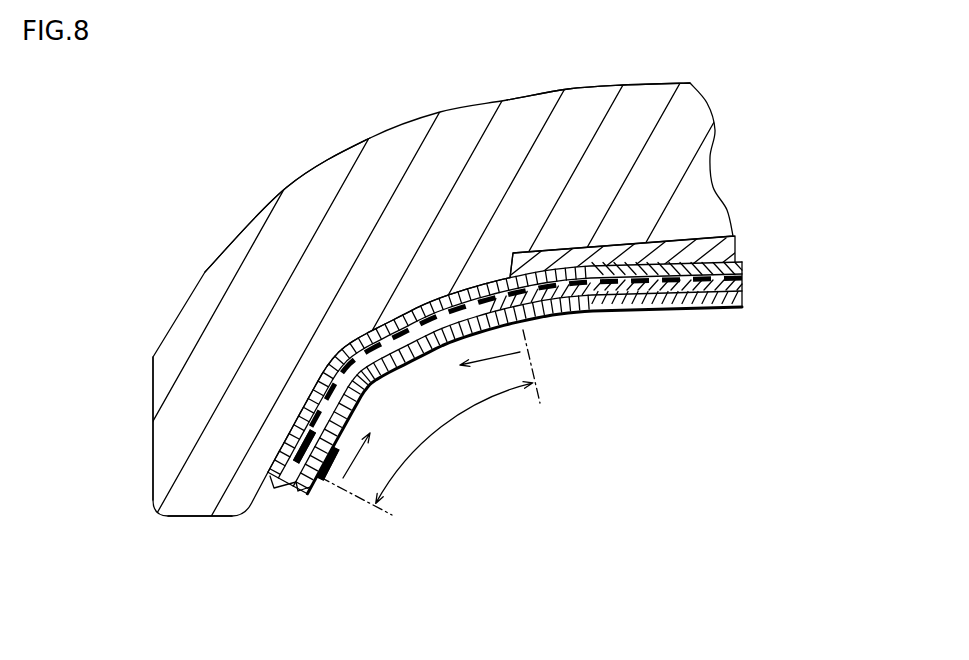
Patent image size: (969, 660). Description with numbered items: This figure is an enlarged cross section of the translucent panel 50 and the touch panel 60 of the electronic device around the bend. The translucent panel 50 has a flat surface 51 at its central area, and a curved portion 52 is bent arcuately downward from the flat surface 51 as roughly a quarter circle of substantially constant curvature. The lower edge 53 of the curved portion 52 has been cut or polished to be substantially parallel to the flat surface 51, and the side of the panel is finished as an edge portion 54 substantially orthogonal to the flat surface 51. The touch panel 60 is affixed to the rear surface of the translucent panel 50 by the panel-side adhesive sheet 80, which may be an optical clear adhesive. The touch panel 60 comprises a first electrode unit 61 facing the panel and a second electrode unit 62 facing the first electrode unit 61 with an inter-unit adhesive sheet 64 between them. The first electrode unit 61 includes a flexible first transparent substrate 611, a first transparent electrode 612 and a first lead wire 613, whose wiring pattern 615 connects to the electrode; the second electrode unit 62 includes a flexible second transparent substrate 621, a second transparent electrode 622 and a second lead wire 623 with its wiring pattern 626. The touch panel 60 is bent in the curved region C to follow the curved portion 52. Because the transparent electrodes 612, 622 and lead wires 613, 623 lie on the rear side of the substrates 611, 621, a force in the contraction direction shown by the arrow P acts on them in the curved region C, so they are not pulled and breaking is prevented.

The translucent panel 50 is at (685, 169).
The flat surface 51 is at (587, 122).
The curved portion 52 is at (330, 233).
The lower edge 53 is at (193, 517).
The edge portion 54 is at (152, 424).
The touch panel 60 is at (432, 335).
The first electrode unit 61 is at (273, 485).
The second electrode unit 62 is at (298, 488).
The inter-unit adhesive sheet 64 is at (690, 309).
The panel-side adhesive sheet 80 is at (682, 240).
The first transparent substrate 611 is at (440, 295).
The first transparent electrode 612 is at (688, 266).
The first lead wire 613 is at (290, 440).
The wiring pattern 615 is at (304, 446).
The second transparent substrate 621 is at (657, 309).
The second transparent electrode 622 is at (593, 309).
The second lead wire 623 is at (331, 468).
The wiring pattern 626 is at (328, 463).
The arrow P is at (360, 470).
The curved region C is at (438, 415).